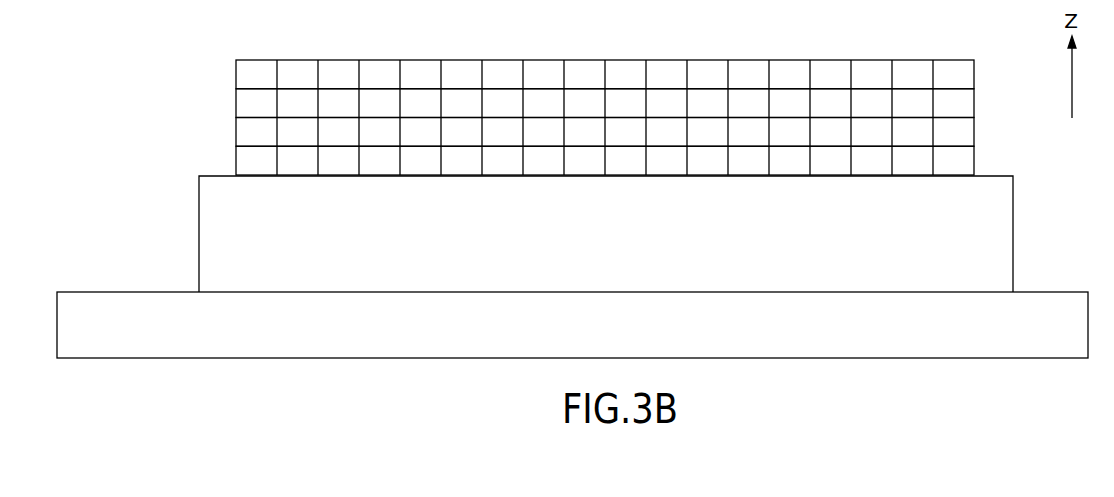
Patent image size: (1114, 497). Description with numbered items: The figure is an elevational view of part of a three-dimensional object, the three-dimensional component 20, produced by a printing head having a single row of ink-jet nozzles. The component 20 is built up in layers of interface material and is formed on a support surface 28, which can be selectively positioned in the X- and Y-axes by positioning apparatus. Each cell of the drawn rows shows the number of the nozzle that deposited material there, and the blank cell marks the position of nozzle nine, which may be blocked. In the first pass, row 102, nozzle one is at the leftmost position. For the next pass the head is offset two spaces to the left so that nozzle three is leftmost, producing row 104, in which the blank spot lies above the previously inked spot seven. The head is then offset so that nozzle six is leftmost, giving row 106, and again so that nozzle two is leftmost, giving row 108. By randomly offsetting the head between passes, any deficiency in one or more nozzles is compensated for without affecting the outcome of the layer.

The 3-D component 20 is at (577, 100).
The support surface 28 is at (644, 234).
The row 102 is at (554, 161).
The row 104 is at (551, 130).
The row 106 is at (551, 94).
The row 108 is at (571, 56).